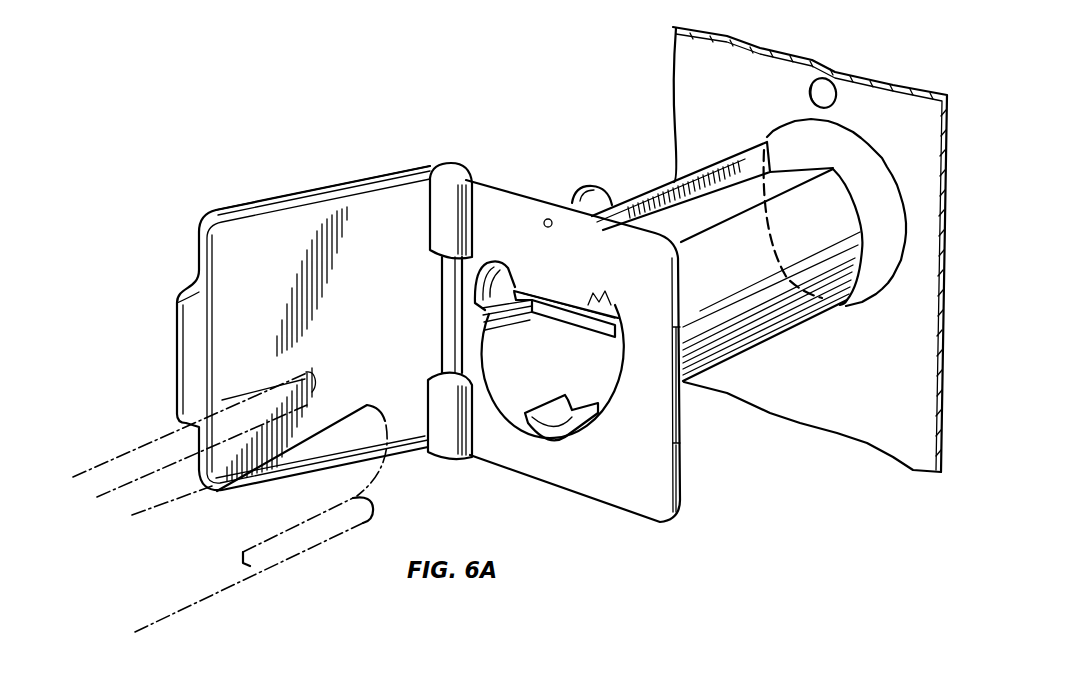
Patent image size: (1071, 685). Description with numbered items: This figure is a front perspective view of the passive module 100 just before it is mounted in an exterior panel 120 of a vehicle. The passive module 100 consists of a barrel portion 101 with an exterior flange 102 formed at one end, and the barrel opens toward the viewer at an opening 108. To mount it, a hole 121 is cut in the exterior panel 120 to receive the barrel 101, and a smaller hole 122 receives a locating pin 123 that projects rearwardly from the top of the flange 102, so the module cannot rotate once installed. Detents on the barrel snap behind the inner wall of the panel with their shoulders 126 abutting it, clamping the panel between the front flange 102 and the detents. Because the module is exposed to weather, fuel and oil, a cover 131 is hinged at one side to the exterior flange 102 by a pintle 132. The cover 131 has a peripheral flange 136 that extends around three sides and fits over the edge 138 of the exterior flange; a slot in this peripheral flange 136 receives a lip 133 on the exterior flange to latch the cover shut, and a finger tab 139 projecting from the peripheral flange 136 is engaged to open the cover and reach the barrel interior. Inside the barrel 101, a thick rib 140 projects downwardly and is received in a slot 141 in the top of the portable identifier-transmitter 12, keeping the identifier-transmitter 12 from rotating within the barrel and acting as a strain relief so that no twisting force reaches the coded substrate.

The portable identifier-transmitter 12 is at (218, 594).
The passive module 100 is at (643, 185).
The barrel portion 101 is at (767, 313).
The exterior flange 102 is at (597, 488).
The opening 108 is at (588, 387).
The exterior panel 120 is at (683, 47).
The hole 121 is at (866, 160).
The hole 122 is at (808, 92).
The locating pin 123 is at (586, 193).
The shoulder 126 is at (492, 270).
The cover 131 is at (292, 224).
The pintle 132 is at (442, 287).
The lip 133 is at (683, 423).
The peripheral flange 136 is at (372, 180).
The edge 138 is at (683, 488).
The finger tab 139 is at (185, 348).
The thick rib 140 is at (558, 290).
The slot 141 is at (322, 412).